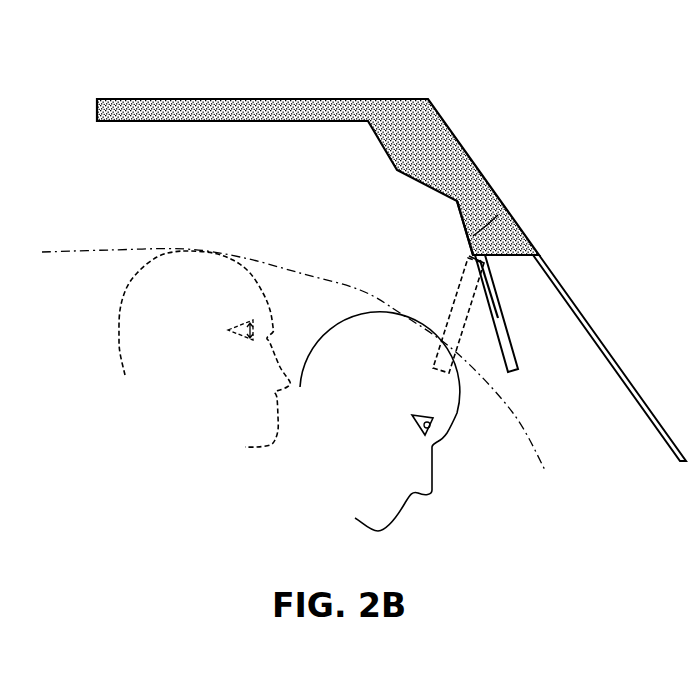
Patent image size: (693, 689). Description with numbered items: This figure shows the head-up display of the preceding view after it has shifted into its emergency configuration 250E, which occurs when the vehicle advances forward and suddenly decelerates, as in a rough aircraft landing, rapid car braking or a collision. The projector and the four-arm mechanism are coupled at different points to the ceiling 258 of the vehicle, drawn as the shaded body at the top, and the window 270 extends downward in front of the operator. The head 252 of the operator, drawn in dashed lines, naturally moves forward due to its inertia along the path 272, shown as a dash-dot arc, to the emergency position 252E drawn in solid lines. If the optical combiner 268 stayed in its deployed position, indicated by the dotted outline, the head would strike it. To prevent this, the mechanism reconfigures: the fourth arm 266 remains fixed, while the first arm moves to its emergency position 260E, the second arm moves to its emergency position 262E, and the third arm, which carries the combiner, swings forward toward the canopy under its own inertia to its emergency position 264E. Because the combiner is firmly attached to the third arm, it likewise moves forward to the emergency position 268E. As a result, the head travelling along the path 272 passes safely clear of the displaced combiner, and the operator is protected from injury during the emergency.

The emergency configuration 250E is at (232, 68).
The ceiling 258 is at (177, 122).
The emergency position of first arm 260E is at (460, 216).
The emergency position of second arm 262E is at (473, 273).
The emergency position of third arm 264E is at (488, 285).
The fourth arm 266 is at (498, 215).
The optical combiner 268 is at (453, 312).
The emergency position of optical combiner 268E is at (514, 347).
The window 270 is at (667, 443).
The path 272 is at (119, 246).
The head 252 is at (118, 328).
The emergency position of head 252E is at (450, 432).